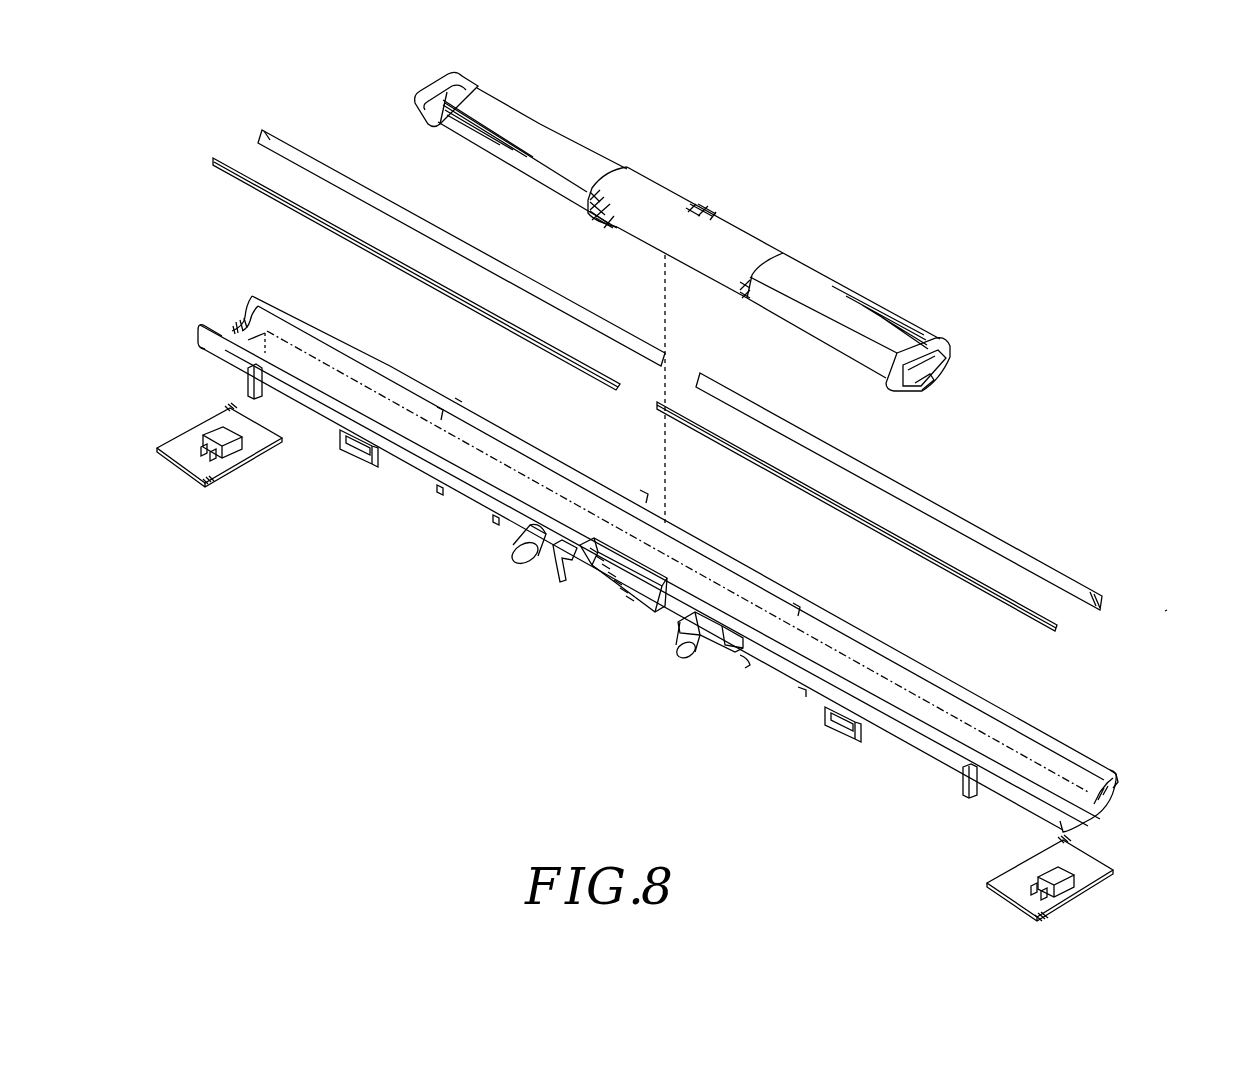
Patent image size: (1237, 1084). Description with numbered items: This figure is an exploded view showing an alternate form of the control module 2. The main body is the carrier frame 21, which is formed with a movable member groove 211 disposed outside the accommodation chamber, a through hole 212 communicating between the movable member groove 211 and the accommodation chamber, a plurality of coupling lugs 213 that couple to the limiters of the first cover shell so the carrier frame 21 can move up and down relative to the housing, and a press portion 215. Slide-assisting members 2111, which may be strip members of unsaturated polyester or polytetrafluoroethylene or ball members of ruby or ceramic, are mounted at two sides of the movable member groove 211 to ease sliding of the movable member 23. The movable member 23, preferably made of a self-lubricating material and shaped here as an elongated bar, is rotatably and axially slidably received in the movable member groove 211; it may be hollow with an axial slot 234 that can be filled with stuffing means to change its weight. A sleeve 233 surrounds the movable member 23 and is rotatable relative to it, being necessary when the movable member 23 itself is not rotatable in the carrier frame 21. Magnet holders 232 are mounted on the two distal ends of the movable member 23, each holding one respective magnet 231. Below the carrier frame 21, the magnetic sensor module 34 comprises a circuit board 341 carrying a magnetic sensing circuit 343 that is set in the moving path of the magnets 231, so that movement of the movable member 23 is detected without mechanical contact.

The control module 2 is at (1163, 611).
The carrier frame 21 is at (1057, 748).
The movable member groove 211 is at (1100, 795).
The slide-assisting members 2111 is at (900, 533).
The through hole 212 is at (628, 592).
The coupling lugs 213 is at (437, 486).
The press portion 215 is at (722, 650).
The movable member 23 is at (815, 325).
The magnet 231 is at (930, 381).
The magnet holder 232 is at (928, 338).
The sleeve 233 is at (640, 185).
The axial slot 234 is at (942, 360).
The magnetic sensor module 34 is at (1098, 856).
The circuit board 341 is at (1085, 885).
The magnetic sensing circuit 343 is at (1048, 870).